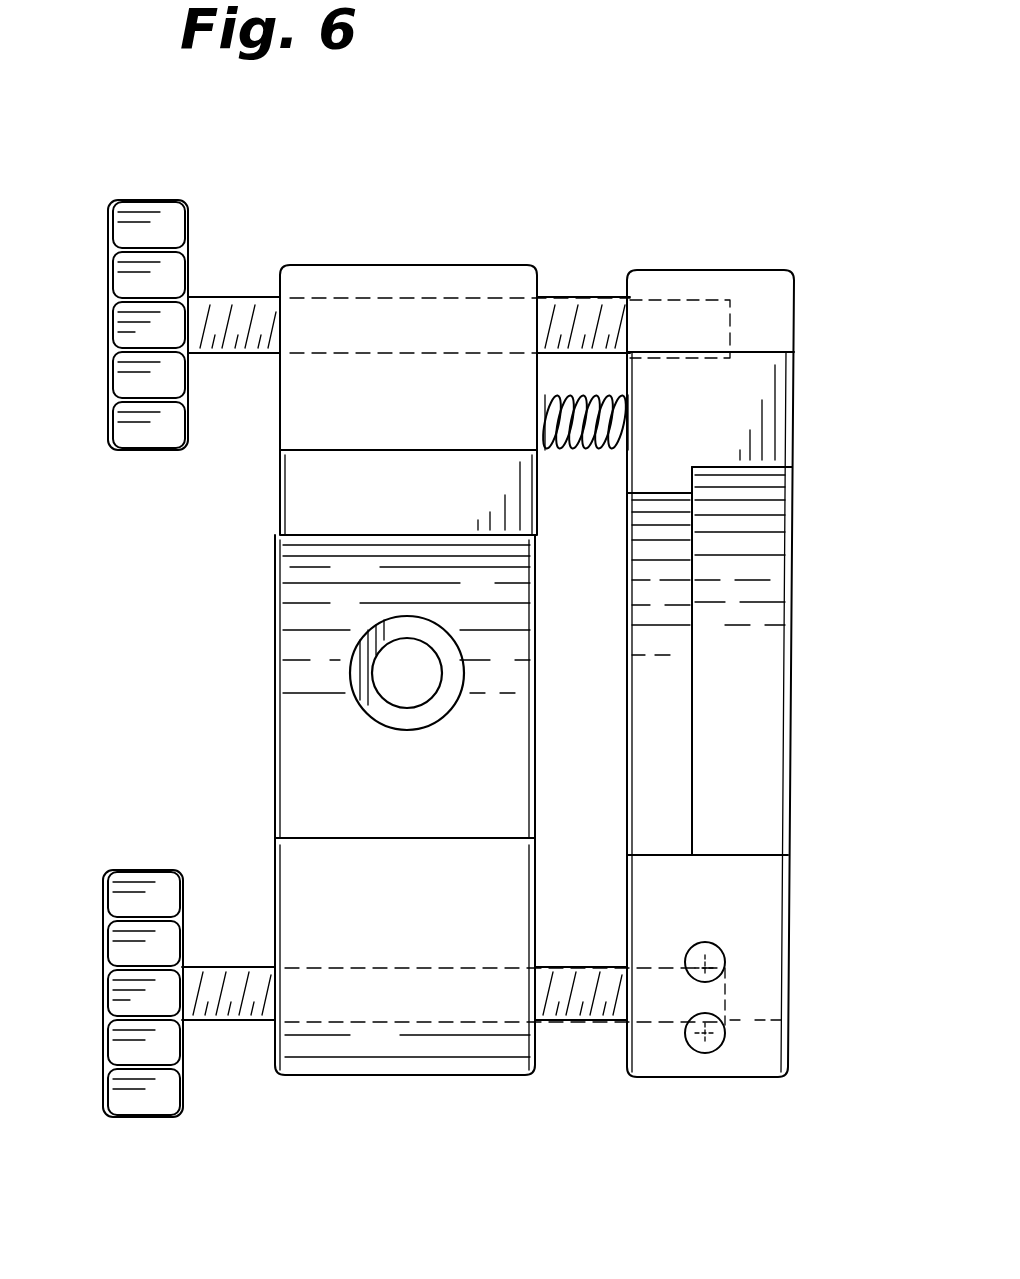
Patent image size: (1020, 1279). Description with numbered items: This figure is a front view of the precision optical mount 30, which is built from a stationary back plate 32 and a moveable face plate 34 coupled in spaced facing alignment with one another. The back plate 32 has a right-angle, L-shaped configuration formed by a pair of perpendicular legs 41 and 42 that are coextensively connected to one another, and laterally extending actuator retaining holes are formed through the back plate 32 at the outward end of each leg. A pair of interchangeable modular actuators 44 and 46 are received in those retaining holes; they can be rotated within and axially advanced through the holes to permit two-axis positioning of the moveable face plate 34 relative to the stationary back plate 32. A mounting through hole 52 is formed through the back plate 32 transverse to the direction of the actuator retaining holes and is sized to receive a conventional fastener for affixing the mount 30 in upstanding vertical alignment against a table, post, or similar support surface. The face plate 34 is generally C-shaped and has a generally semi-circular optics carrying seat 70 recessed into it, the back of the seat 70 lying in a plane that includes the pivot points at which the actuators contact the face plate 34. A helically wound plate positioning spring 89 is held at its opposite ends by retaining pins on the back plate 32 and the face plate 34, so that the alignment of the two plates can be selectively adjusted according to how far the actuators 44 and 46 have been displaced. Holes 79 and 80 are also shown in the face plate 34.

The precision optical mount 30 is at (838, 262).
The stationary back plate 32 is at (278, 578).
The moveable face plate 34 is at (726, 268).
The leg 41 is at (408, 265).
The leg 42 is at (430, 1080).
The modular actuator 44 is at (100, 318).
The modular actuator 46 is at (100, 990).
The mounting through hole 52 is at (382, 670).
The optics carrying seat 70 is at (694, 668).
The pin hole 79 is at (715, 955).
The pin hole 80 is at (718, 1032).
The plate positioning spring 89 is at (598, 410).